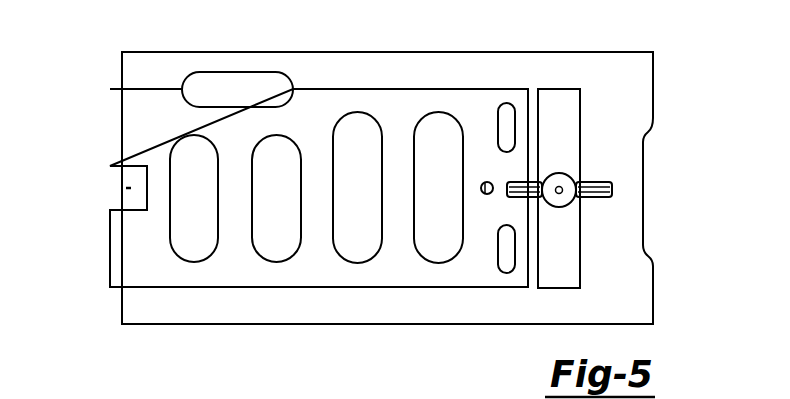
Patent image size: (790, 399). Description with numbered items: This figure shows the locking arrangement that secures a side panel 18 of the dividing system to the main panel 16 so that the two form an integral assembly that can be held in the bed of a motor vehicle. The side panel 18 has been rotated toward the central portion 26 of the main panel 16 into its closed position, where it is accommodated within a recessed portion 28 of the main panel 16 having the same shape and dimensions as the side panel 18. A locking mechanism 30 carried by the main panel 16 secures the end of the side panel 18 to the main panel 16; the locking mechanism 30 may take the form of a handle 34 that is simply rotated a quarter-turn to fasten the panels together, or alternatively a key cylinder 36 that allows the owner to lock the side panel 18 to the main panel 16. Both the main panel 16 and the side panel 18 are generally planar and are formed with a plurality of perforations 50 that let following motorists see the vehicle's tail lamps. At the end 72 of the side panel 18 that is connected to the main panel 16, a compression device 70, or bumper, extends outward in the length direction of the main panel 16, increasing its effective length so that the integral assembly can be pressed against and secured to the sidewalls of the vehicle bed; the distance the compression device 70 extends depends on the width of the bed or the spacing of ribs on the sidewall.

The main panel 16 is at (623, 150).
The side panel 18 is at (319, 145).
The central portion 26 is at (647, 93).
The recessed portion 28 is at (471, 90).
The locking mechanism 30 is at (557, 207).
The handle 34 is at (612, 192).
The key cylinder 36 is at (482, 197).
The perforations 50 is at (358, 253).
The compression device 70 is at (110, 129).
The end 72 is at (133, 265).